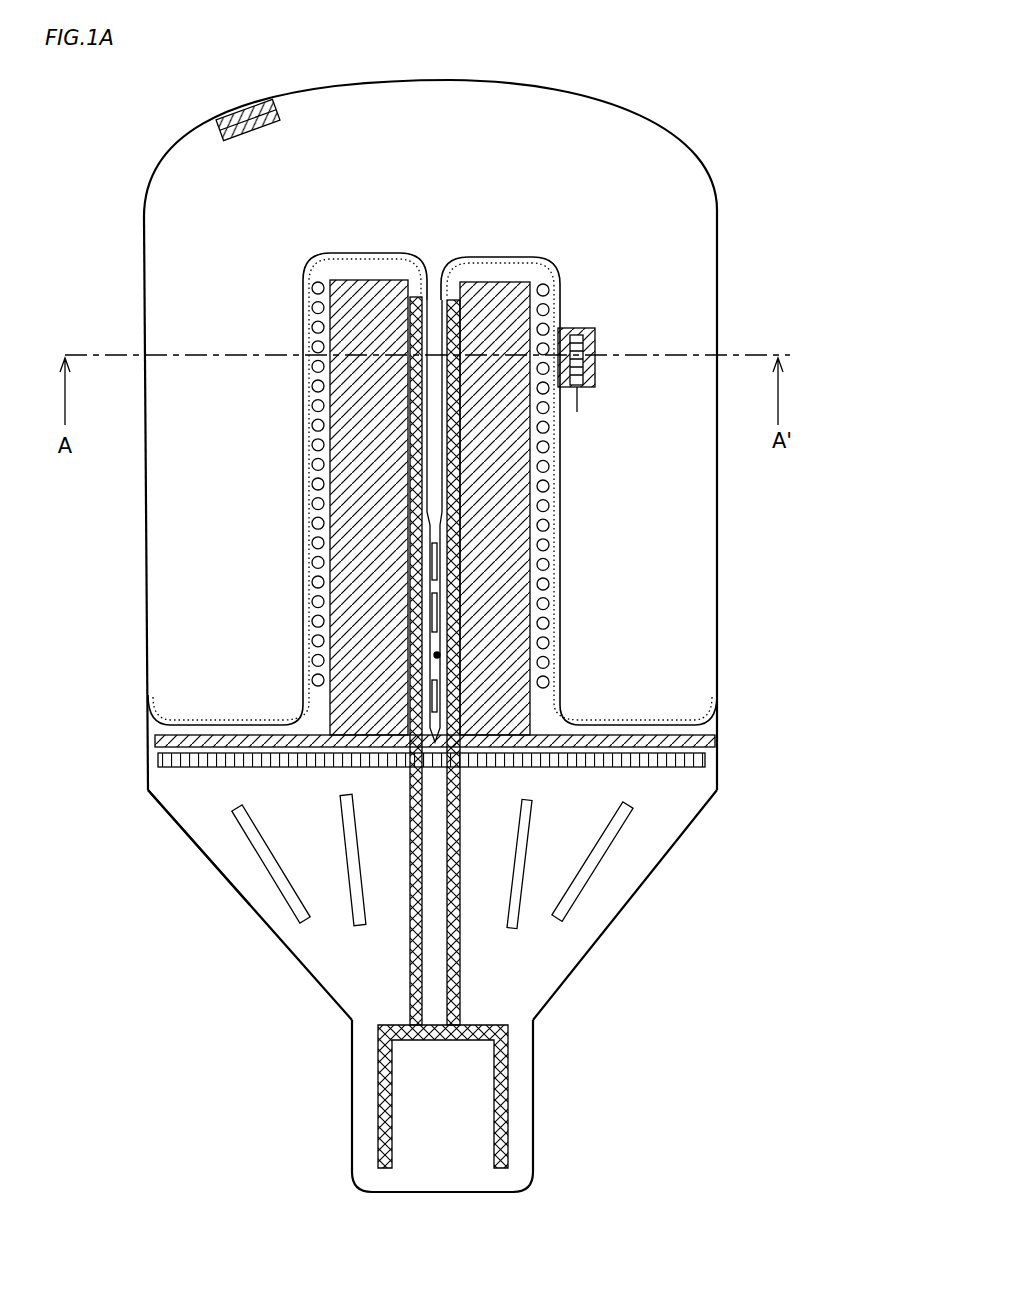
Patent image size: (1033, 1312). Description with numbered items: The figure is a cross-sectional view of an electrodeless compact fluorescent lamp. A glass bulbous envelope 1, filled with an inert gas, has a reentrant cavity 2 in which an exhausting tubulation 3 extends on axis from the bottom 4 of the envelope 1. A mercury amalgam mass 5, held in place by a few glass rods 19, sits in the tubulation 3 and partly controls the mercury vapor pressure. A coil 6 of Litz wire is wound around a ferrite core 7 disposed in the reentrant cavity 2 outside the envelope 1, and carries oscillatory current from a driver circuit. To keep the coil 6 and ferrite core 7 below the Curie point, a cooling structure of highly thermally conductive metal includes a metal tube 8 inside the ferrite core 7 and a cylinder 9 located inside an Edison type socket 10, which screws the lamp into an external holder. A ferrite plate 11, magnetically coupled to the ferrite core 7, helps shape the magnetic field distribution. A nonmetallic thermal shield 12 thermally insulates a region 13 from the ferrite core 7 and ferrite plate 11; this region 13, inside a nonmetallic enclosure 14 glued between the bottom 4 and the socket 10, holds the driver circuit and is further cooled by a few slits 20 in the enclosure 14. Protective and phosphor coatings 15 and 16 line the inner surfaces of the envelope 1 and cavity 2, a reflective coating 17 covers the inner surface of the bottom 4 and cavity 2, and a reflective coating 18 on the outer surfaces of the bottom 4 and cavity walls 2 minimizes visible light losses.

The bulbous envelope 1 is at (718, 245).
The reentrant cavity 2 is at (303, 305).
The exhausting tubulation 3 is at (443, 480).
The bottom 4 is at (650, 718).
The mercury amalgam mass 5 is at (434, 655).
The coil 6 is at (303, 425).
The ferrite core 7 is at (510, 565).
The metal tube 8 is at (303, 312).
The cylinder 9 is at (508, 1052).
The Edison type socket 10 is at (533, 1120).
The ferrite plate 11 is at (718, 748).
The thermal shield 12 is at (195, 772).
The region 13 is at (630, 943).
The enclosure 14 is at (215, 873).
The protective coating 15 is at (567, 328).
The phosphor coating 16 is at (615, 322).
The reflective coating 17 is at (577, 416).
The reflective coating 18 is at (752, 728).
The glass rods 19 is at (441, 563).
The slits 20 is at (712, 852).